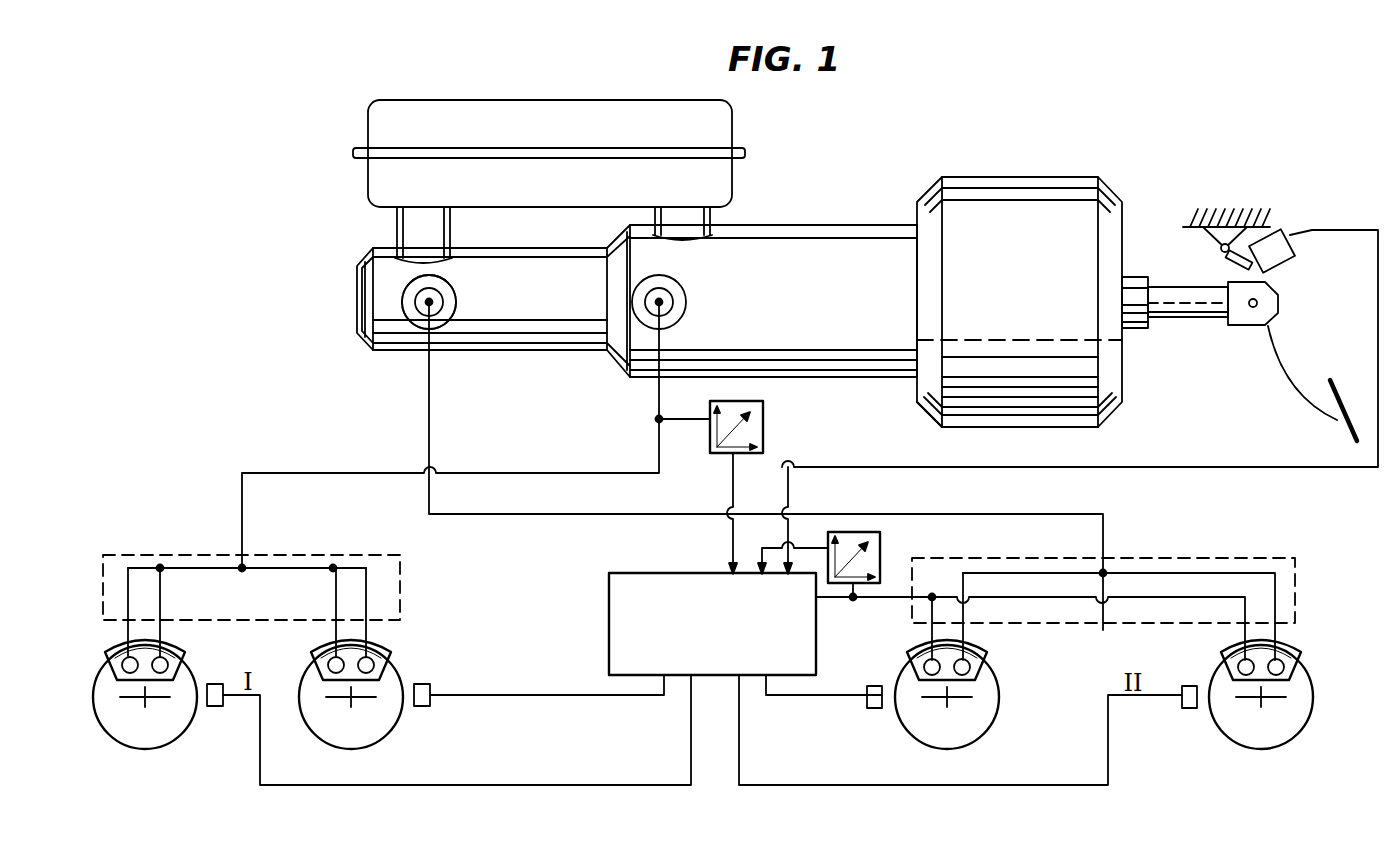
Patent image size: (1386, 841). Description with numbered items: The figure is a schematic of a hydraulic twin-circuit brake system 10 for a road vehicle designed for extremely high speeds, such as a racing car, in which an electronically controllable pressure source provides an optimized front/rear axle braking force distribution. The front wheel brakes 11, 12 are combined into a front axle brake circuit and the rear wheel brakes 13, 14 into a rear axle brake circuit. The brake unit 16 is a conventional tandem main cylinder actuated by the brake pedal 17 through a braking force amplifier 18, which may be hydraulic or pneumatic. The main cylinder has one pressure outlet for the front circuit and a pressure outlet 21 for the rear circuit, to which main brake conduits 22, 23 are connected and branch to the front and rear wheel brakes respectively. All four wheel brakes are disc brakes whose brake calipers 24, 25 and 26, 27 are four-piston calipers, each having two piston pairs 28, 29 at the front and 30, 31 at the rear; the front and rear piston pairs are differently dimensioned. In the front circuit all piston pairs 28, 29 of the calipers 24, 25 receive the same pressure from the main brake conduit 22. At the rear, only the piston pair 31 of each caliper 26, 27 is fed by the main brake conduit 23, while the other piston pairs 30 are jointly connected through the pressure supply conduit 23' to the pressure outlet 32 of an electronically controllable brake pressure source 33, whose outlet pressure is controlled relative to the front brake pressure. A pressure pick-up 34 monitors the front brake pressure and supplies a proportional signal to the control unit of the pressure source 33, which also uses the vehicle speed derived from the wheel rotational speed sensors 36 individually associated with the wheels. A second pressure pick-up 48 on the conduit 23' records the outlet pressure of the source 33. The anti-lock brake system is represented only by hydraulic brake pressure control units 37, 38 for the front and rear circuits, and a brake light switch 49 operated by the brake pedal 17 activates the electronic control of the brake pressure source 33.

The brake system 10 is at (243, 241).
The front wheel brake 11 is at (107, 724).
The front wheel brake 12 is at (314, 724).
The rear wheel brake 13 is at (907, 725).
The rear wheel brake 14 is at (1222, 725).
The brake unit 16 is at (784, 219).
The brake pedal 17 is at (1338, 385).
The braking force amplifier 18 is at (1120, 198).
The pressure outlet 21 is at (428, 302).
The main brake conduit 22 is at (543, 473).
The main brake conduit 23 is at (766, 466).
The pressure supply conduit 23' is at (1119, 616).
The brake caliper 24 is at (118, 646).
The brake caliper 25 is at (316, 642).
The brake caliper 26 is at (920, 650).
The brake caliper 27 is at (1233, 650).
The piston pair 28 is at (122, 667).
The piston pair 29 is at (180, 667).
The piston pair 30 is at (924, 668).
The piston pair 31 is at (983, 668).
The pressure outlet 32 is at (816, 598).
The electronically controllable brake pressure source 33 is at (622, 572).
The pressure pick-up 34 is at (763, 432).
The wheel rotational speed sensor 36 is at (211, 708).
The brake pressure control unit 37 is at (330, 556).
The brake pressure control unit 38 is at (1180, 558).
The pressure pick-up 48 is at (880, 558).
The brake light switch 49 is at (1296, 265).